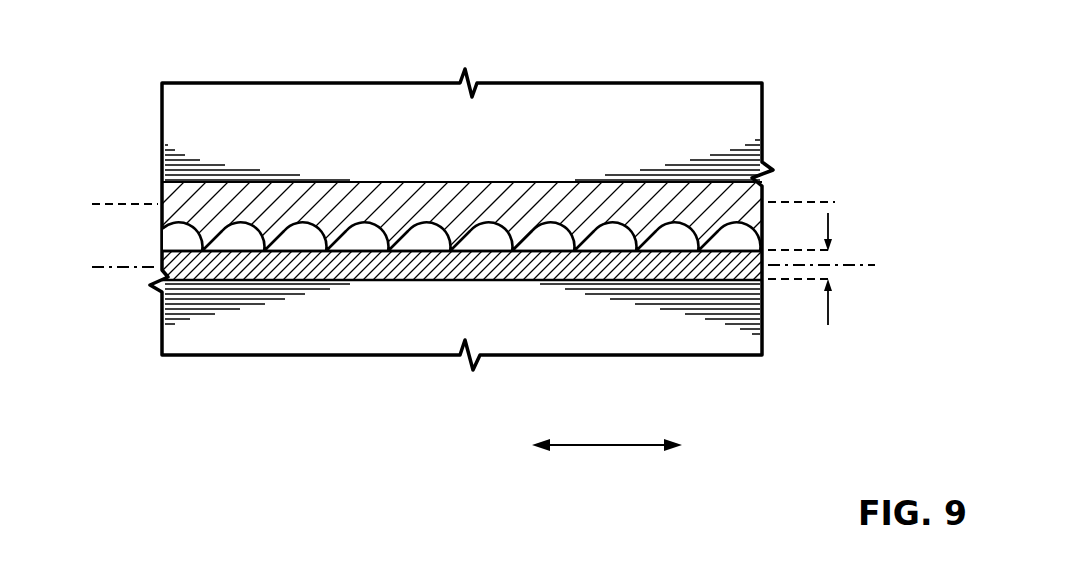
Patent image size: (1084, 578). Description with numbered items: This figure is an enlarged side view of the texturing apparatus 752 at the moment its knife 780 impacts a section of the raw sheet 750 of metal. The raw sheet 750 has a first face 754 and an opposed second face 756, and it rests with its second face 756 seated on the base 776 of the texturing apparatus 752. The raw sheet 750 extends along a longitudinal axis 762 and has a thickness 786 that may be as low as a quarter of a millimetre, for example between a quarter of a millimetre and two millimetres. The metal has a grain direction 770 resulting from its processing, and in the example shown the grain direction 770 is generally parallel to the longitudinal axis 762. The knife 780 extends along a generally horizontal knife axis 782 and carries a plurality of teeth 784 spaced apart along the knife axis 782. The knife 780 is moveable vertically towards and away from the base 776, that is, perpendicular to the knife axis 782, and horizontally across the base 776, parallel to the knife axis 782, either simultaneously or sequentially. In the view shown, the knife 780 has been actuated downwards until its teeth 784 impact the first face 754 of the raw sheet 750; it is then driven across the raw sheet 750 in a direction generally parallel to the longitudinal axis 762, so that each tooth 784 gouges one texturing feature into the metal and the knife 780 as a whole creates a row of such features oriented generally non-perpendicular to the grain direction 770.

The raw sheet of metal 750 is at (317, 267).
The texturing apparatus 752 is at (207, 124).
The first face 754 is at (663, 252).
The second face 756 is at (727, 282).
The longitudinal axis 762 is at (847, 265).
The grain direction 770 is at (605, 445).
The base 776 is at (318, 332).
The knife 780 is at (178, 192).
The knife axis 782 is at (800, 200).
The teeth 784 is at (507, 236).
The thickness 786 is at (828, 313).